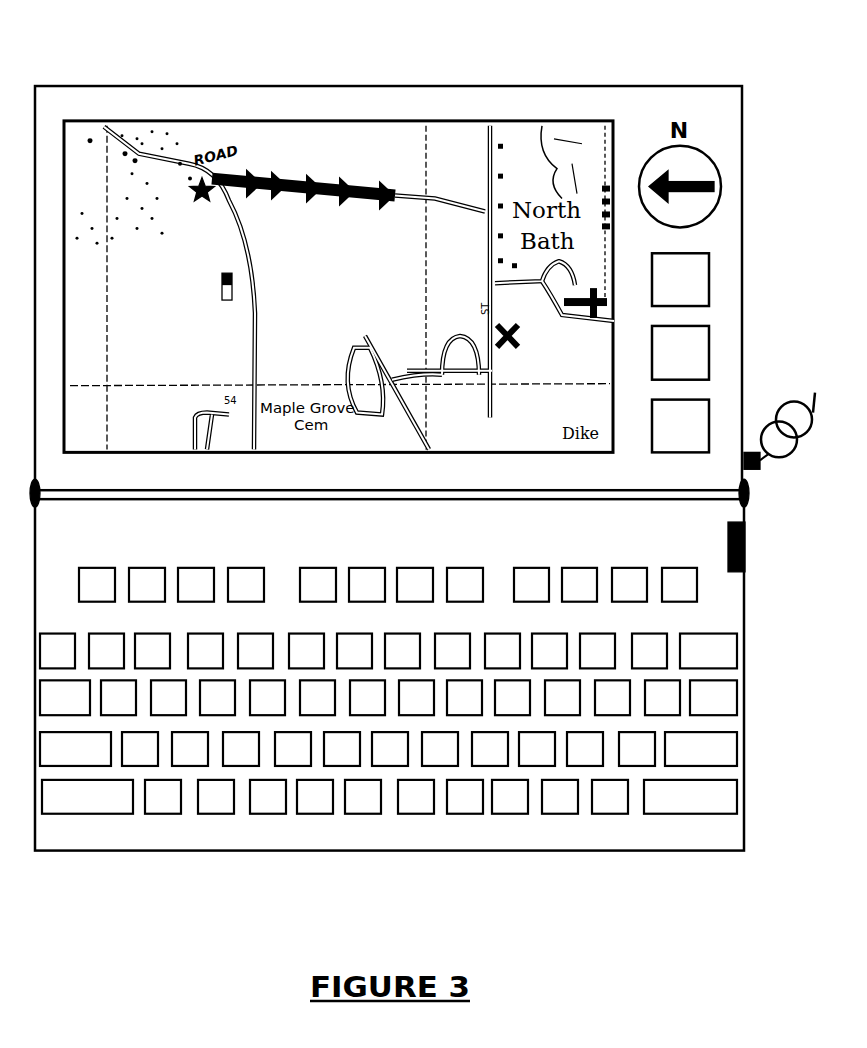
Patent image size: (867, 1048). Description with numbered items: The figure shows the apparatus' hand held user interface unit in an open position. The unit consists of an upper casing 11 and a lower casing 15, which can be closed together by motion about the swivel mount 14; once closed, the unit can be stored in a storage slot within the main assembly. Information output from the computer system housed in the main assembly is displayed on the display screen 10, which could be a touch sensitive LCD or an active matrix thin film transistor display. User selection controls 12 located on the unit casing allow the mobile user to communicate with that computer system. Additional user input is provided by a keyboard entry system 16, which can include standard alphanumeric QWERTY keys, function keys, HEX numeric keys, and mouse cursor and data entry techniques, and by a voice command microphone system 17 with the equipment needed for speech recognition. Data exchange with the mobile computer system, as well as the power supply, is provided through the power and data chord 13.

The display screen 10 is at (299, 137).
The hand held interface unit upper casing 11 is at (419, 79).
The interface unit user selection controls 12 is at (705, 263).
The power and data chord 13 is at (796, 376).
The swivel mount 14 is at (765, 509).
The hand held interface unit lower casing 15 is at (346, 849).
The keyboard entry system 16 is at (671, 811).
The voice command microphone system 17 is at (761, 585).